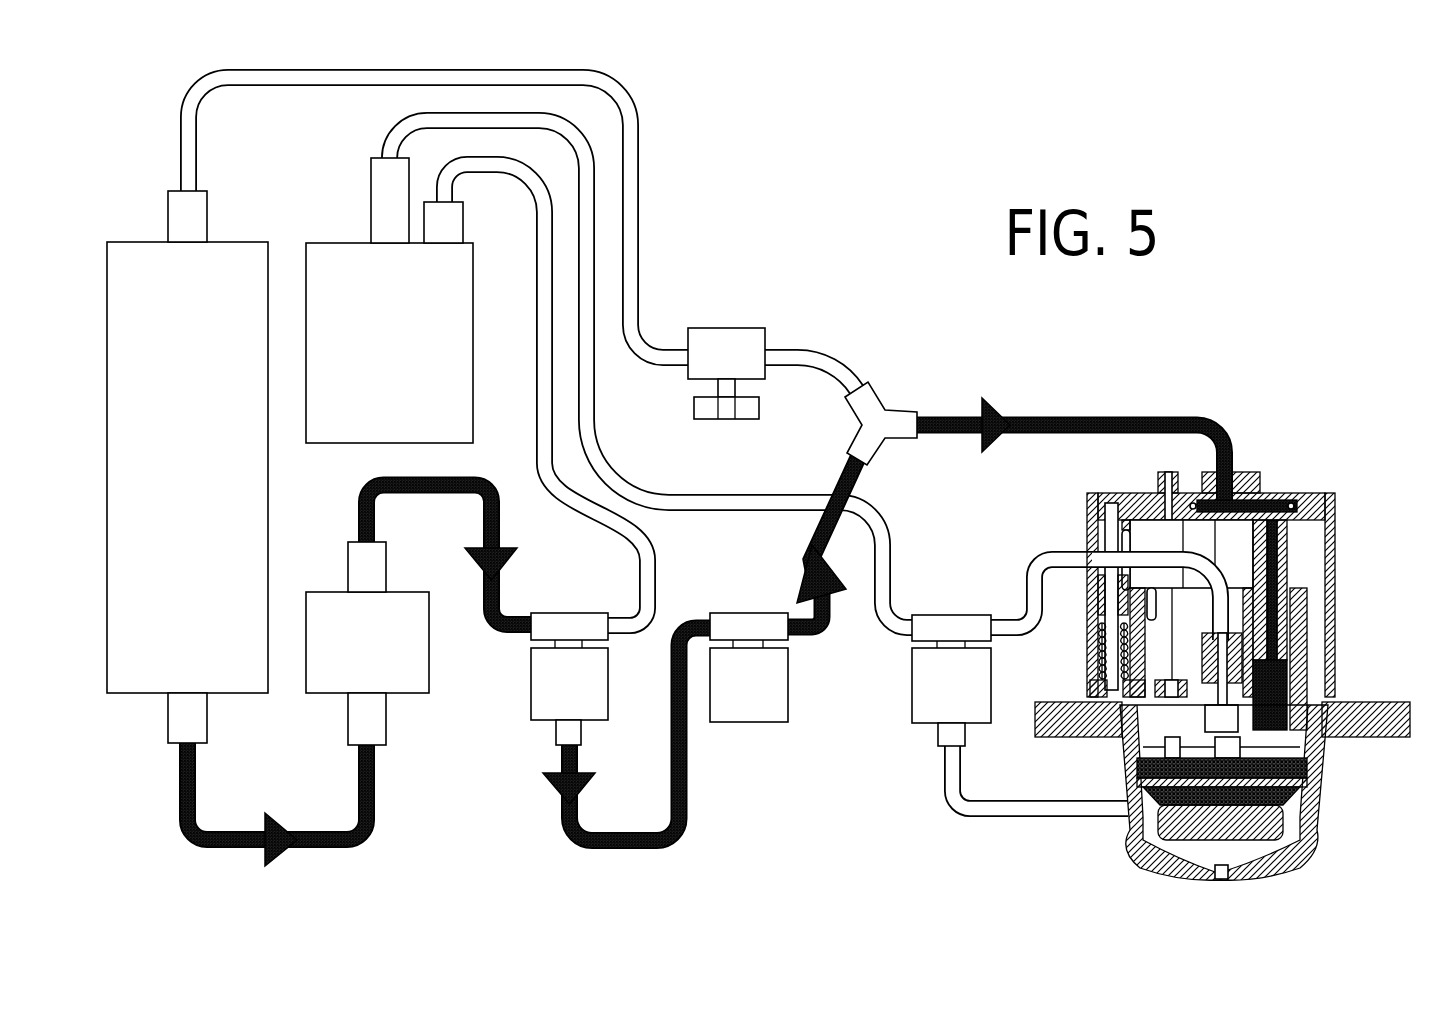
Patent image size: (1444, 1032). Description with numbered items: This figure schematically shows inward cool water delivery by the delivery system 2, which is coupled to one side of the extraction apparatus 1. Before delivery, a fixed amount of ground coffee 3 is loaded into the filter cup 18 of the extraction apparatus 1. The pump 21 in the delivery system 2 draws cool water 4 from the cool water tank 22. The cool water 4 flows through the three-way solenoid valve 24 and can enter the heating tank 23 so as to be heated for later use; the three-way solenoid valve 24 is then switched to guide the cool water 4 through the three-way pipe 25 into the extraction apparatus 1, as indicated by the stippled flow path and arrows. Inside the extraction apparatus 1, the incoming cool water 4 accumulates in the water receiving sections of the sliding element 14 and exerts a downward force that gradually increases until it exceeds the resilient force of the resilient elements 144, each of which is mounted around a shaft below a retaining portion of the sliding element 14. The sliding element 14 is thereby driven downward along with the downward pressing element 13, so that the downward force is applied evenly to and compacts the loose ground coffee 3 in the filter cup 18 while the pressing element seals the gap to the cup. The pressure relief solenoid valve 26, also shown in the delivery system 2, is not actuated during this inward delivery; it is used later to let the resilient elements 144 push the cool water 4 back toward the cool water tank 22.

The extraction apparatus 1 is at (1216, 675).
The delivery system 2 is at (782, 772).
The ground coffee 3 is at (1269, 793).
The cool water 4 is at (367, 817).
The downward pressing element 13 is at (1283, 747).
The sliding element 14 is at (1300, 608).
The filter cup 18 is at (1317, 857).
The pump 21 is at (325, 680).
The cool water tank 22 is at (135, 680).
The heating tank 23 is at (326, 432).
The three-way solenoid valve 24 is at (547, 697).
The three-way pipe 25 is at (891, 418).
The pressure relief solenoid valve 26 is at (725, 342).
The resilient element 144 is at (1093, 665).